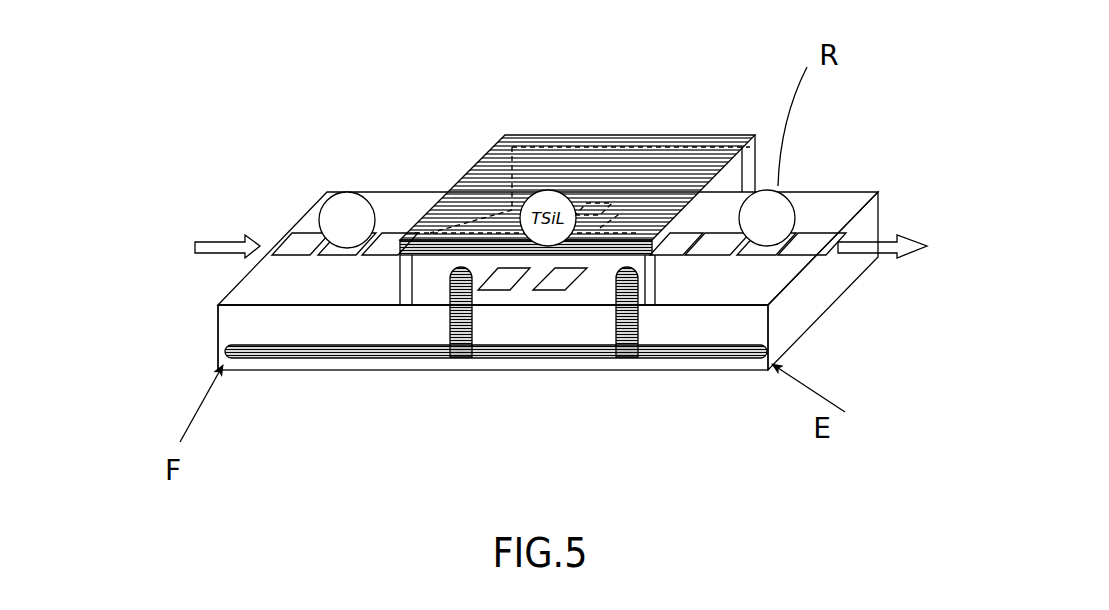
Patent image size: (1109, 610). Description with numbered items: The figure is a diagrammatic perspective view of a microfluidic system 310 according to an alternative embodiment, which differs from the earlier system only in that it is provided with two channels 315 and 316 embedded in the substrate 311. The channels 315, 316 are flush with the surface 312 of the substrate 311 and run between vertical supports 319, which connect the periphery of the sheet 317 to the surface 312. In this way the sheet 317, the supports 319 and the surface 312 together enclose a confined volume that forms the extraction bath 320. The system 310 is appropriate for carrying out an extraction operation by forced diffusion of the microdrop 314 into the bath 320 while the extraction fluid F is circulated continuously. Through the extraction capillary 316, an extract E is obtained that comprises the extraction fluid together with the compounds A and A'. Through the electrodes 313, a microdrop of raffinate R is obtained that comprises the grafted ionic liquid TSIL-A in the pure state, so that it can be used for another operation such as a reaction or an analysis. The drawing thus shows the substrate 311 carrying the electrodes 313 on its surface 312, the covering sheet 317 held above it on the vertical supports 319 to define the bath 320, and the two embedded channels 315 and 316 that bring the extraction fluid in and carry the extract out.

The microfluidic system 310 is at (448, 400).
The substrate 311 is at (218, 330).
The surface 312 is at (318, 305).
The electrodes 313 is at (300, 245).
The microdrop 314 is at (347, 190).
The channel 315 is at (463, 352).
The extraction capillary 316 is at (616, 351).
The sheet 317 is at (605, 197).
The vertical supports 319 is at (776, 190).
The extraction bath 320 is at (602, 268).